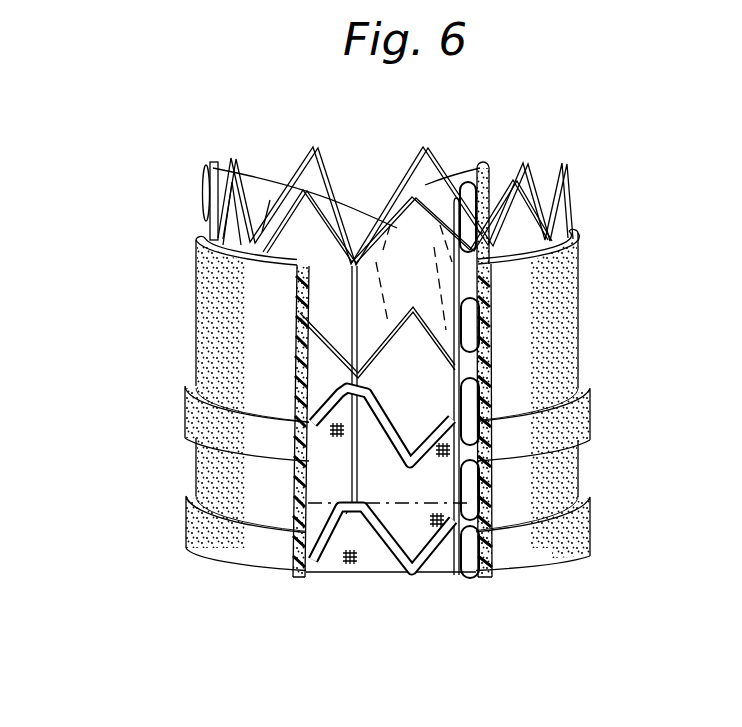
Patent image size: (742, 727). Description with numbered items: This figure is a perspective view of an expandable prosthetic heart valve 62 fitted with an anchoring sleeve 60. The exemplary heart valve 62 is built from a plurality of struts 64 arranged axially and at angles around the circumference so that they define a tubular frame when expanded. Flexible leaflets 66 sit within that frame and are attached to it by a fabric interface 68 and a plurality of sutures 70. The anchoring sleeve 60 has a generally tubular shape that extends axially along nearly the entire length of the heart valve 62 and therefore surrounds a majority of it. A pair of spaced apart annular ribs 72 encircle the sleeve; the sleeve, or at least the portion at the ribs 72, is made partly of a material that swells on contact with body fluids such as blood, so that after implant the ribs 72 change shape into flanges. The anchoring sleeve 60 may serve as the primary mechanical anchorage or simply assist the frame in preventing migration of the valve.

The anchoring sleeve 60 is at (167, 357).
The expandable prosthetic heart valve 62 is at (410, 366).
The struts 64 is at (300, 155).
The flexible leaflets 66 is at (345, 232).
The fabric interface 68 is at (410, 518).
The sutures 70 is at (376, 543).
The annular ribs 72 is at (590, 512).